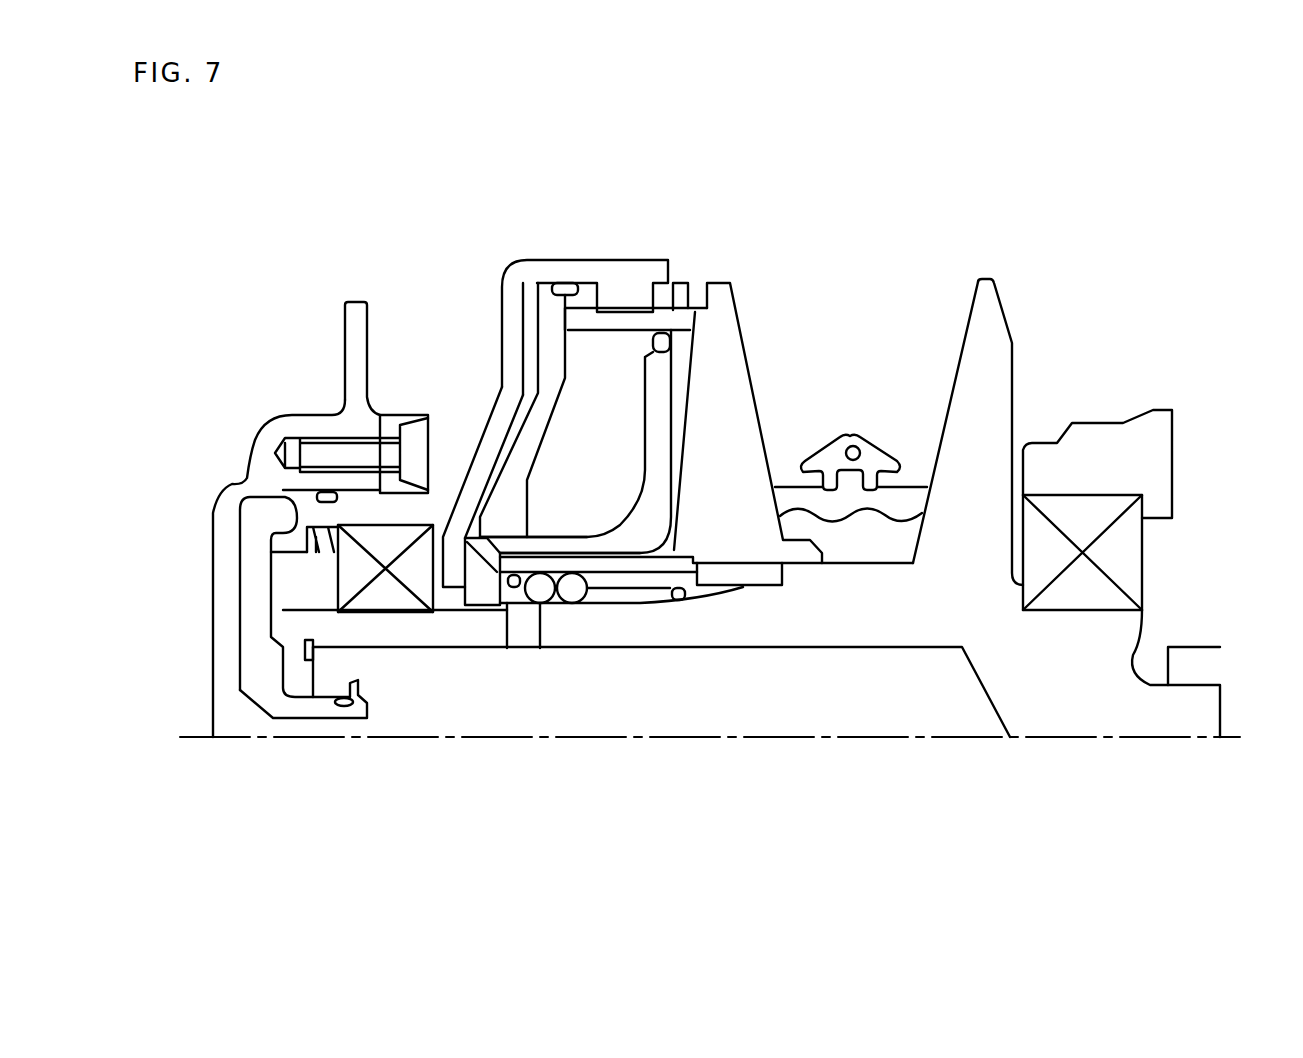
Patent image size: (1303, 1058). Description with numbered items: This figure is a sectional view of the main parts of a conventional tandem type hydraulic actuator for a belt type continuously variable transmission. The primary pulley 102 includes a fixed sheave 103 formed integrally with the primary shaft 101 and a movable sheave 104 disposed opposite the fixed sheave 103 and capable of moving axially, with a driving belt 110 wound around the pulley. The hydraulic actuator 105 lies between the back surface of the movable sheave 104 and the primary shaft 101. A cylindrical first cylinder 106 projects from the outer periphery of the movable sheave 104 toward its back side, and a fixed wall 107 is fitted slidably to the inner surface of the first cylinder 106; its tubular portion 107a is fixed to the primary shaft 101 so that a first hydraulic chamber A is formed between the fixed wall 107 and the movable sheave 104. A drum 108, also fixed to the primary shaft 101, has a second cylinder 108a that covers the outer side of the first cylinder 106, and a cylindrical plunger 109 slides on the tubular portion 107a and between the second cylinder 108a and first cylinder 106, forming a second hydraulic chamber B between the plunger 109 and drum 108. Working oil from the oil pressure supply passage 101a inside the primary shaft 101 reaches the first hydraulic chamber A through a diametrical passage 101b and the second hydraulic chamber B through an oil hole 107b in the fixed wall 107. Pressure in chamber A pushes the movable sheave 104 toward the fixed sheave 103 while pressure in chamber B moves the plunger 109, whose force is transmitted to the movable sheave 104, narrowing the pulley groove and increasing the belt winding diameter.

The primary shaft 101 is at (1150, 630).
The oil pressure supply passage 101a is at (640, 707).
The passage 101b is at (523, 635).
The primary pulley 102 is at (1012, 318).
The fixed sheave 103 is at (968, 298).
The movable sheave 104 is at (735, 335).
The hydraulic actuator 105 is at (620, 244).
The first cylinder 106 is at (648, 320).
The fixed wall 107 is at (637, 433).
The tubular portion 107a is at (563, 538).
The oil hole 107b is at (489, 574).
The drum 108 is at (492, 320).
The second cylinder 108a is at (594, 262).
The plunger 109 is at (576, 379).
The driving belt 110 is at (884, 440).
The first hydraulic chamber A is at (696, 386).
The second hydraulic chamber B is at (522, 363).